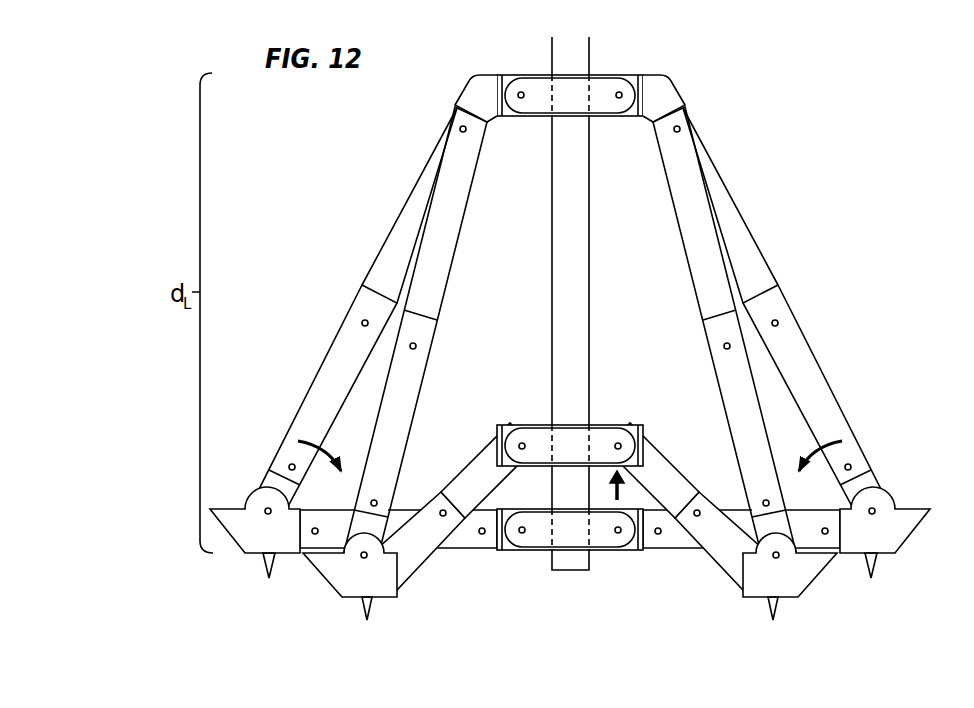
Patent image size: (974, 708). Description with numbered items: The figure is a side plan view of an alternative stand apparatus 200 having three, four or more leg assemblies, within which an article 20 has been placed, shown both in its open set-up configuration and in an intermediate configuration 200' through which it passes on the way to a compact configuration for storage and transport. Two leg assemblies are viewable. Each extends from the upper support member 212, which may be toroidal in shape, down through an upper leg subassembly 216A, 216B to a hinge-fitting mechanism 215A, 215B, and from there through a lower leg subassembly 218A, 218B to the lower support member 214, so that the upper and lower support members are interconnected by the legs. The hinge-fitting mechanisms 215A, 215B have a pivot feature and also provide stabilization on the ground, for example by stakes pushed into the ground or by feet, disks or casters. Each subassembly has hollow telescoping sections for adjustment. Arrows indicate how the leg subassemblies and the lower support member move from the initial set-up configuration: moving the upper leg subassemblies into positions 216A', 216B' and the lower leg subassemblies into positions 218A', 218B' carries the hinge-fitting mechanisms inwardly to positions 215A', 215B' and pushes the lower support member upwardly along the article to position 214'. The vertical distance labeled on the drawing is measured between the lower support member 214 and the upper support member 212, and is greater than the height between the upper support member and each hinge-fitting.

The article 20 is at (550, 58).
The apparatus 200 is at (788, 311).
The intermediate configuration 200' is at (698, 331).
The upper support member 212 is at (619, 70).
The lower support member 214 is at (556, 554).
The lower support member intermediate position 214' is at (571, 416).
The hinge-fitting mechanism 215A is at (250, 570).
The hinge-fitting mechanism inward position 215A' is at (338, 589).
The hinge-fitting mechanism 215B is at (885, 569).
The hinge-fitting mechanism inward position 215B' is at (796, 592).
The upper leg subassembly 216A is at (351, 311).
The upper leg subassembly intermediate position 216A' is at (431, 331).
The upper leg subassembly 216B is at (818, 360).
The upper leg subassembly intermediate position 216B' is at (708, 331).
The lower leg subassembly 218A is at (398, 571).
The lower leg subassembly intermediate position 218A' is at (479, 464).
The lower leg subassembly 218B is at (739, 562).
The lower leg subassembly intermediate position 218B' is at (662, 465).